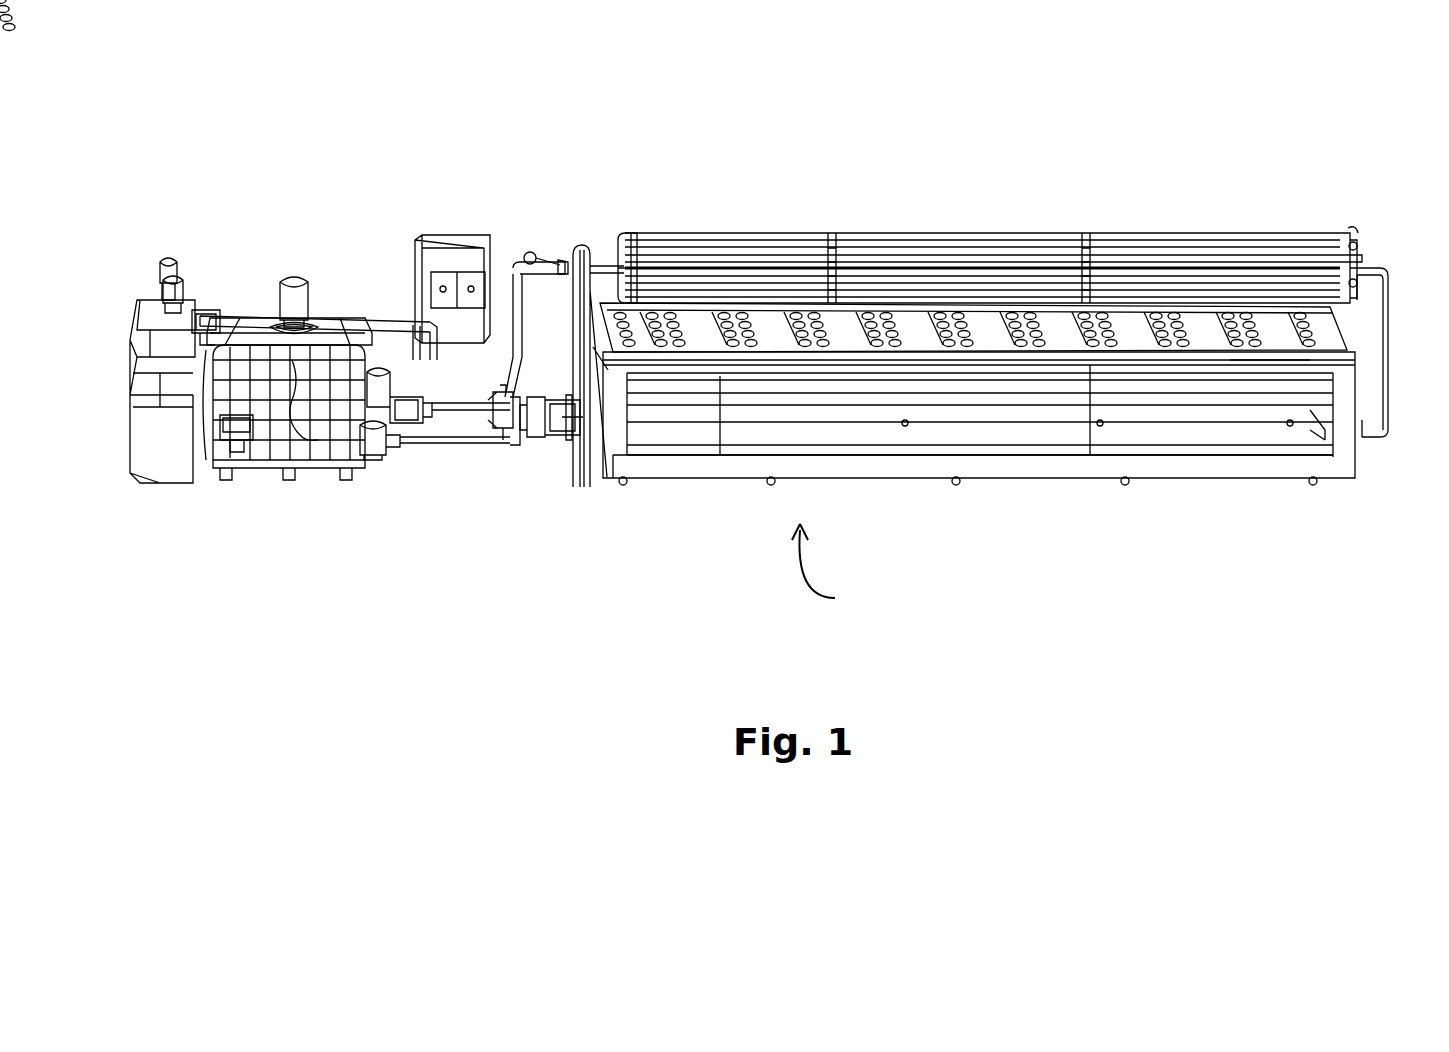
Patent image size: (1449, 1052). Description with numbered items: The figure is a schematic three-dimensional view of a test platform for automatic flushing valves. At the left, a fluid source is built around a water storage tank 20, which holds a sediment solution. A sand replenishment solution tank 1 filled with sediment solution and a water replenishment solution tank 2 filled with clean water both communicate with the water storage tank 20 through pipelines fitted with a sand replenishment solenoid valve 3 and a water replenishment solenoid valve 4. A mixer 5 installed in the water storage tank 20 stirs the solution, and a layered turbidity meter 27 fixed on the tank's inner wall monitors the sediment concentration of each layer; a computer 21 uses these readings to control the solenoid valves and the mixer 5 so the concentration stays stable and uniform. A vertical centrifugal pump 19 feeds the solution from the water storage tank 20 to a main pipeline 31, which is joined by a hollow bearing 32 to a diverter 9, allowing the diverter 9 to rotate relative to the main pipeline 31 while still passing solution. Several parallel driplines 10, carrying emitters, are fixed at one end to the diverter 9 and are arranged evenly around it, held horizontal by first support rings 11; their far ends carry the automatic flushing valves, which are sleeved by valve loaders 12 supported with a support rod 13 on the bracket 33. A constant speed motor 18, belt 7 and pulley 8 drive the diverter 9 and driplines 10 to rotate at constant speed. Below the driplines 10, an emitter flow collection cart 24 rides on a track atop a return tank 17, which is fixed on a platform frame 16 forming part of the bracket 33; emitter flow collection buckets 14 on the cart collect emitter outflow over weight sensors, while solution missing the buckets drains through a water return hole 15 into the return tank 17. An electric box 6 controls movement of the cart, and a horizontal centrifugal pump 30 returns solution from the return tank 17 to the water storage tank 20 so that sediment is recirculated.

The sand replenishment solution tank 1 is at (158, 298).
The water replenishment solution tank 2 is at (187, 300).
The sand replenishment solenoid valve 3 is at (211, 310).
The water replenishment solenoid valve 4 is at (228, 316).
The mixer 5 is at (298, 280).
The electric box 6 is at (463, 233).
The belt 7 is at (583, 392).
The pulley 8 is at (575, 252).
The diverter 9 is at (628, 242).
The dripline 10 is at (773, 234).
The first support ring 11 is at (850, 233).
The valve loader 12 is at (1350, 258).
The support rod 13 is at (1384, 352).
The emitter flow collection bucket 14 is at (1120, 348).
The water return hole 15 is at (1093, 345).
The platform frame 16 is at (885, 466).
The return tank 17 is at (717, 380).
The constant speed motor 18 is at (553, 432).
The vertical centrifugal pump 19 is at (377, 452).
The water storage tank 20 is at (333, 482).
The computer 21 is at (217, 480).
The emitter flow collection cart 24 is at (1227, 360).
The layered turbidity meter 27 is at (287, 470).
The horizontal centrifugal pump 30 is at (400, 398).
The main pipeline 31 is at (497, 400).
The hollow bearing 32 is at (563, 268).
The bracket 33 is at (835, 569).